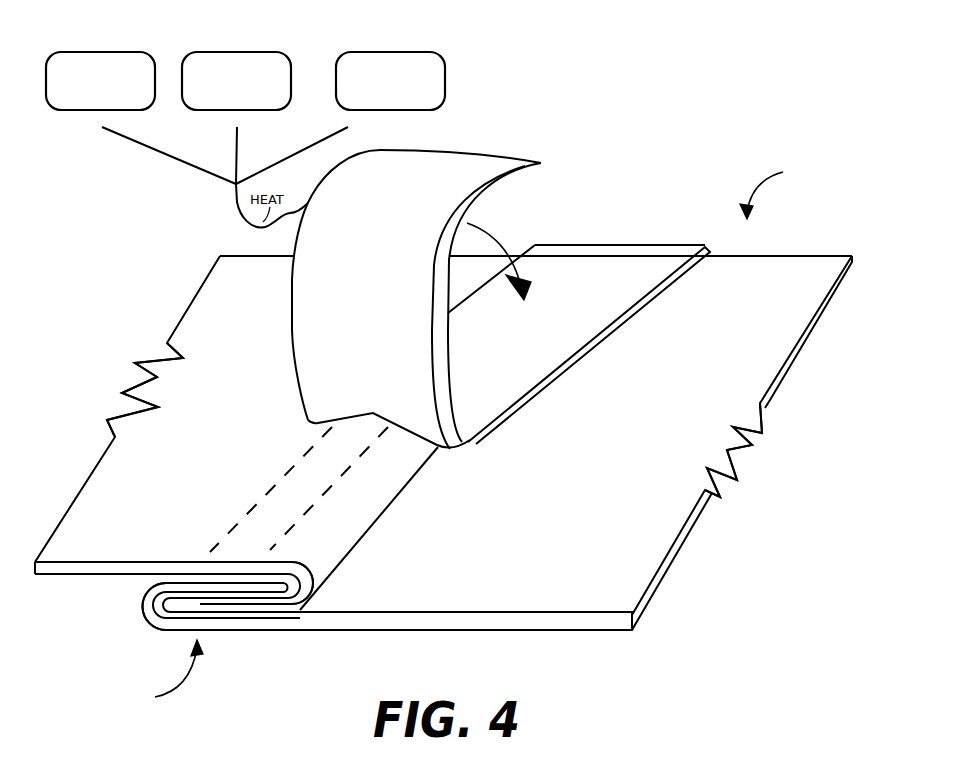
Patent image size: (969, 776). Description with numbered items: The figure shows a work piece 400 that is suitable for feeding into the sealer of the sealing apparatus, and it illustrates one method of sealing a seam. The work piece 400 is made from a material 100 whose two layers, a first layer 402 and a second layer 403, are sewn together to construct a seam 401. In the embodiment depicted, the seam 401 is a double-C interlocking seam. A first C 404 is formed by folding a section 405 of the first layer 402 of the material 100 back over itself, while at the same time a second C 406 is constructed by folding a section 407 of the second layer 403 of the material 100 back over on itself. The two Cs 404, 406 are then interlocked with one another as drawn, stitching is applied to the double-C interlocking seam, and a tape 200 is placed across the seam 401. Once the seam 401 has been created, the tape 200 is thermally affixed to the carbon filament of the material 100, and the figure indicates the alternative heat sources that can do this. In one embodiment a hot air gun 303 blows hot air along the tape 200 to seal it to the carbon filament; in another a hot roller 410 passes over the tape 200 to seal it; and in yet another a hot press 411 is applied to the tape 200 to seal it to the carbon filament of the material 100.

The material 100 is at (762, 328).
The tape 200 is at (585, 273).
The hot air gun 303 is at (98, 50).
The work piece 400 is at (780, 193).
The seam 401 is at (211, 645).
The first layer 402 is at (673, 570).
The second layer 403 is at (92, 493).
The first C 404 is at (147, 605).
The section of the first layer 405 is at (187, 587).
The second C 406 is at (300, 587).
The section of the second layer 407 is at (222, 607).
The hot roller 410 is at (237, 50).
The hot press 411 is at (388, 50).